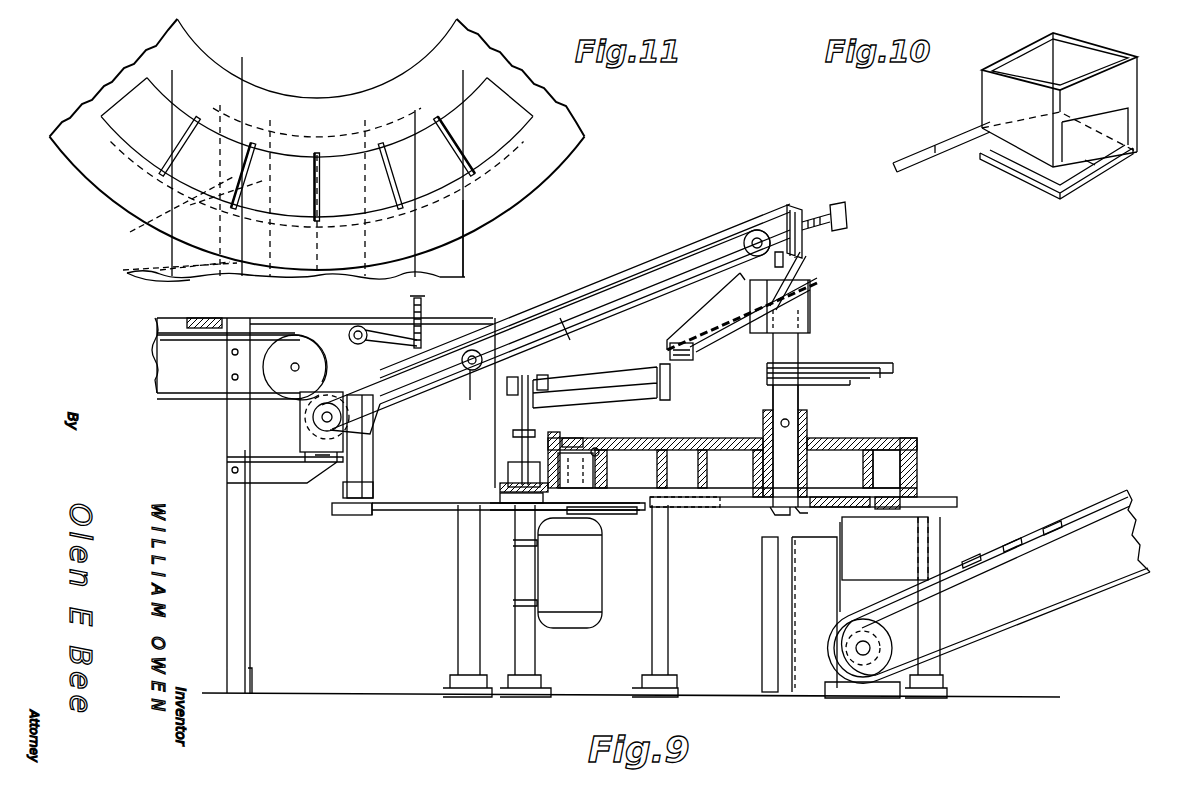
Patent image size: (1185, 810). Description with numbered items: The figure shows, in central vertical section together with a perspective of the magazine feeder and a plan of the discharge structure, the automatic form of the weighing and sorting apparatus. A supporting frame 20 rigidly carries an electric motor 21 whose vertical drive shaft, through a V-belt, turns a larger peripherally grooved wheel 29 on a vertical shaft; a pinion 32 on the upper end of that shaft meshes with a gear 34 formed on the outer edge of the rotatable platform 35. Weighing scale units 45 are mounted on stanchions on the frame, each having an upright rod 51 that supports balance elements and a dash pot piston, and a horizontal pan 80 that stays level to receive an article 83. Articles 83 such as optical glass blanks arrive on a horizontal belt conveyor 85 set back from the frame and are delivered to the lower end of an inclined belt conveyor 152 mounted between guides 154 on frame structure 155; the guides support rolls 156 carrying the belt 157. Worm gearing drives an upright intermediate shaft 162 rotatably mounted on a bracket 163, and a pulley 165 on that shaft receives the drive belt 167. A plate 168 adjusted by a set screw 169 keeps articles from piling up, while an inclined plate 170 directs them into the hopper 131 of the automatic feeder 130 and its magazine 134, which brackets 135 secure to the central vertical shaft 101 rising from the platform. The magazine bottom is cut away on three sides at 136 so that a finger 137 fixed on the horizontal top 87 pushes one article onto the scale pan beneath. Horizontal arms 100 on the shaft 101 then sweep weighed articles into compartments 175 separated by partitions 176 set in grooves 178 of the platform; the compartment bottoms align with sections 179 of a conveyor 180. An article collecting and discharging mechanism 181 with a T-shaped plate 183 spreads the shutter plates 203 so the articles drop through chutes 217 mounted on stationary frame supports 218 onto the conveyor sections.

In FIG. 9, the supporting frame 20 is at (494, 494).
In FIG. 9, the electric motor 21 is at (602, 572).
In FIG. 9, the peripherally grooved wheel 29 is at (620, 512).
In FIG. 9, the pinion 32 is at (572, 438).
In FIG. 9, the gear 34 is at (598, 450).
In FIG. 11, the rotatable platform 35 is at (468, 35).
In FIG. 9, the rotatable platform 35 is at (853, 437).
In FIG. 9, the weighing scale unit 45 is at (603, 366).
In FIG. 9, the upright rod 51 is at (505, 466).
In FIG. 9, the pan 80 is at (680, 360).
In FIG. 10, the article 83 is at (1095, 168).
In FIG. 9, the article 83 is at (222, 318).
In FIG. 9, the belt conveyor 85 is at (170, 395).
In FIG. 9, the horizontal top 87 is at (566, 360).
In FIG. 9, the horizontal arm 100 is at (815, 373).
In FIG. 9, the central vertical shaft 101 is at (800, 397).
In FIG. 9, the automatic feeder 130 is at (690, 329).
In FIG. 9, the hopper 131 is at (815, 283).
In FIG. 10, the magazine 134 is at (1137, 92).
In FIG. 9, the bracket 135 is at (808, 338).
In FIG. 10, the cut-away portion 136 is at (1040, 166).
In FIG. 10, the finger 137 is at (957, 127).
In FIG. 9, the inclined belt conveyor 152 is at (615, 278).
In FIG. 9, the guide 154 is at (662, 260).
In FIG. 9, the frame structure 155 is at (465, 398).
In FIG. 9, the roll 156 is at (312, 420).
In FIG. 9, the belt 157 is at (552, 308).
In FIG. 9, the upright intermediate shaft 162 is at (373, 470).
In FIG. 9, the bracket 163 is at (343, 497).
In FIG. 9, the pulley 165 is at (357, 520).
In FIG. 9, the drive belt 167 is at (418, 513).
In FIG. 9, the plate 168 is at (383, 321).
In FIG. 9, the set screw 169 is at (421, 305).
In FIG. 9, the inclined plate 170 is at (812, 250).
In FIG. 11, the compartment 175 is at (402, 153).
In FIG. 9, the compartment 175 is at (887, 455).
In FIG. 11, the partition 176 is at (262, 180).
In FIG. 11, the groove 178 is at (130, 232).
In FIG. 11, the conveyor section 179 is at (123, 270).
In FIG. 11, the conveyor 180 is at (470, 252).
In FIG. 9, the conveyor 180 is at (1008, 628).
In FIG. 9, the article collecting and discharging mechanism 181 is at (741, 514).
In FIG. 9, the T-shaped plate 183 is at (790, 514).
In FIG. 9, the shutter plate 203 is at (890, 512).
In FIG. 11, the chute 217 is at (282, 125).
In FIG. 9, the chute 217 is at (840, 610).
In FIG. 9, the stationary frame support 218 is at (812, 540).